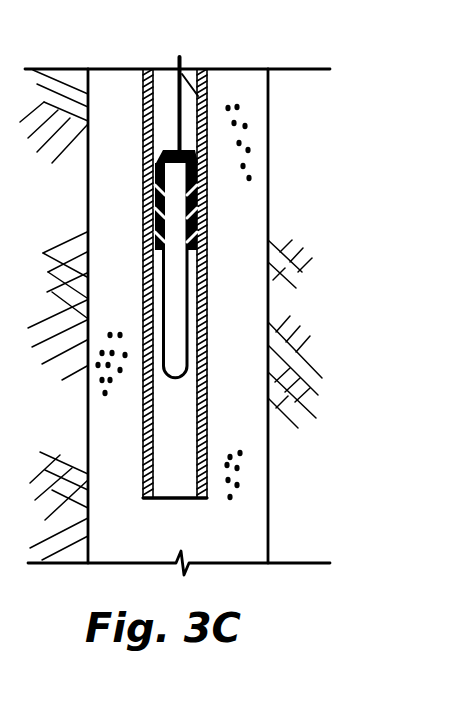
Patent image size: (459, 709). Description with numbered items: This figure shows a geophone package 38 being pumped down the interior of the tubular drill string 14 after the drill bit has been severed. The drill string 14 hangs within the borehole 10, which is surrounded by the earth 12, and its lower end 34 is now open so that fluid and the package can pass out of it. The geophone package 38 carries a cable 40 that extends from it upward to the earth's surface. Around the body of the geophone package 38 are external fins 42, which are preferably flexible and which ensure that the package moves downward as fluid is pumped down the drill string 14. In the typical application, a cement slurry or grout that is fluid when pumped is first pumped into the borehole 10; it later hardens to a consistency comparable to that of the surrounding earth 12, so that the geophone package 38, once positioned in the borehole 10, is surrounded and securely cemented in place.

The borehole 10 is at (277, 440).
The earth's surface 12 is at (323, 315).
The tubular drill string 14 is at (211, 134).
The lower end of the drill string 34 is at (204, 499).
The geophone package 38 is at (185, 243).
The cable 40 is at (214, 69).
The external fins 42 is at (156, 208).